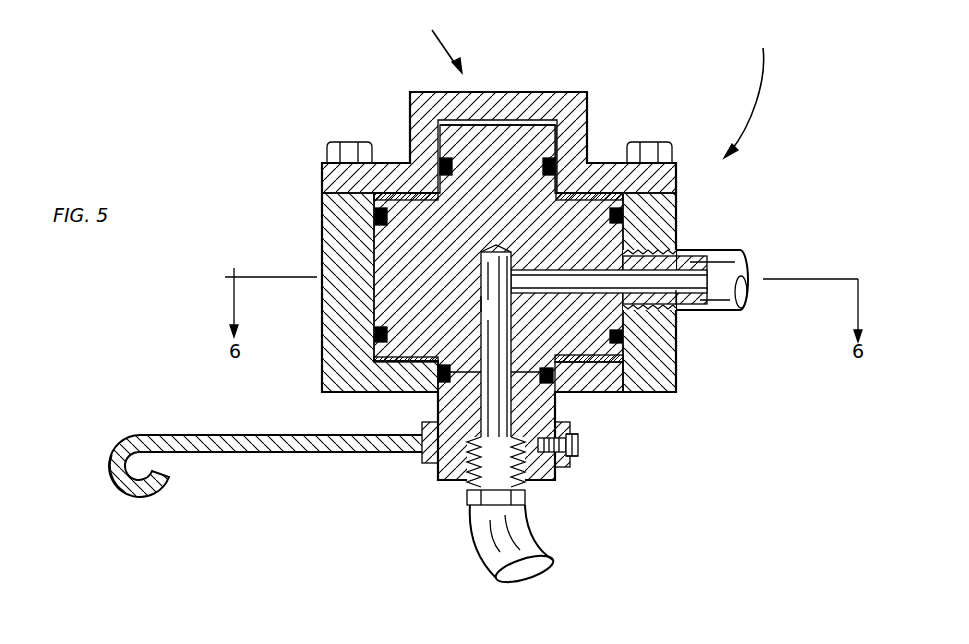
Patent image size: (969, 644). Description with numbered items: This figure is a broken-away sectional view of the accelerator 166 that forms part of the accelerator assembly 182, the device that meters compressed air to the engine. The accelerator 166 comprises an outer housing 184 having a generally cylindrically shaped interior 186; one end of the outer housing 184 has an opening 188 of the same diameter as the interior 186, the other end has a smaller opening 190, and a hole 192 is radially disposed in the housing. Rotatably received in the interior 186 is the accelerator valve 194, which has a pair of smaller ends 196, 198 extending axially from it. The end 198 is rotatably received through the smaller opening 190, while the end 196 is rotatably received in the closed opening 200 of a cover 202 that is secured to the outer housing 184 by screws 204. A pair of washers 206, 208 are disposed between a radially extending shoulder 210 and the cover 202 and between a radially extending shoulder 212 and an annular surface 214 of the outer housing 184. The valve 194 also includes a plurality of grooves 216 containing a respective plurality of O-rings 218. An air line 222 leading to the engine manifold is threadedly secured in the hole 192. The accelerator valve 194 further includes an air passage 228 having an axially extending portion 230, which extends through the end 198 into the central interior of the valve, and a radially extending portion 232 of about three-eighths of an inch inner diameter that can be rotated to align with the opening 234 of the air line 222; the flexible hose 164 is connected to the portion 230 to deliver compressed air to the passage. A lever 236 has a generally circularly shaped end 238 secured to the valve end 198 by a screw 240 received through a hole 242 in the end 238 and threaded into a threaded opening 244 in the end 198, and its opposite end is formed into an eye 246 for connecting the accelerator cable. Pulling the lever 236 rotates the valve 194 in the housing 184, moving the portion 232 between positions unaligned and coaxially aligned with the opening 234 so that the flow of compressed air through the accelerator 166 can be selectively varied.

The flexible hose 164 is at (490, 545).
The accelerator 166 is at (431, 39).
The accelerator assembly 182 is at (752, 91).
The outer housing 184 is at (322, 240).
The interior 186 is at (377, 270).
The opening 188 is at (383, 197).
The smaller opening 190 is at (438, 405).
The hole 192 is at (683, 252).
The accelerator valve 194 is at (470, 284).
The end 196 is at (547, 142).
The end 198 is at (557, 416).
The closed opening 200 is at (448, 143).
The cover 202 is at (505, 100).
The screws 204 is at (348, 150).
The washer 206 is at (405, 200).
The washer 208 is at (415, 360).
The radially extending shoulder 210 is at (562, 199).
The radially extending shoulder 212 is at (560, 357).
The annular surface 214 is at (594, 377).
The grooves 216 is at (452, 170).
The O-rings 218 is at (448, 165).
The air line 222 is at (740, 260).
The air passage 228 is at (500, 300).
The axially extending portion 230 is at (425, 470).
The radially extending portion 232 is at (560, 269).
The opening 234 is at (676, 290).
The lever 236 is at (186, 433).
The circularly shaped end 238 is at (560, 466).
The screw 240 is at (575, 455).
The hole 242 is at (578, 443).
The threaded opening 244 is at (541, 470).
The eye 246 is at (114, 470).